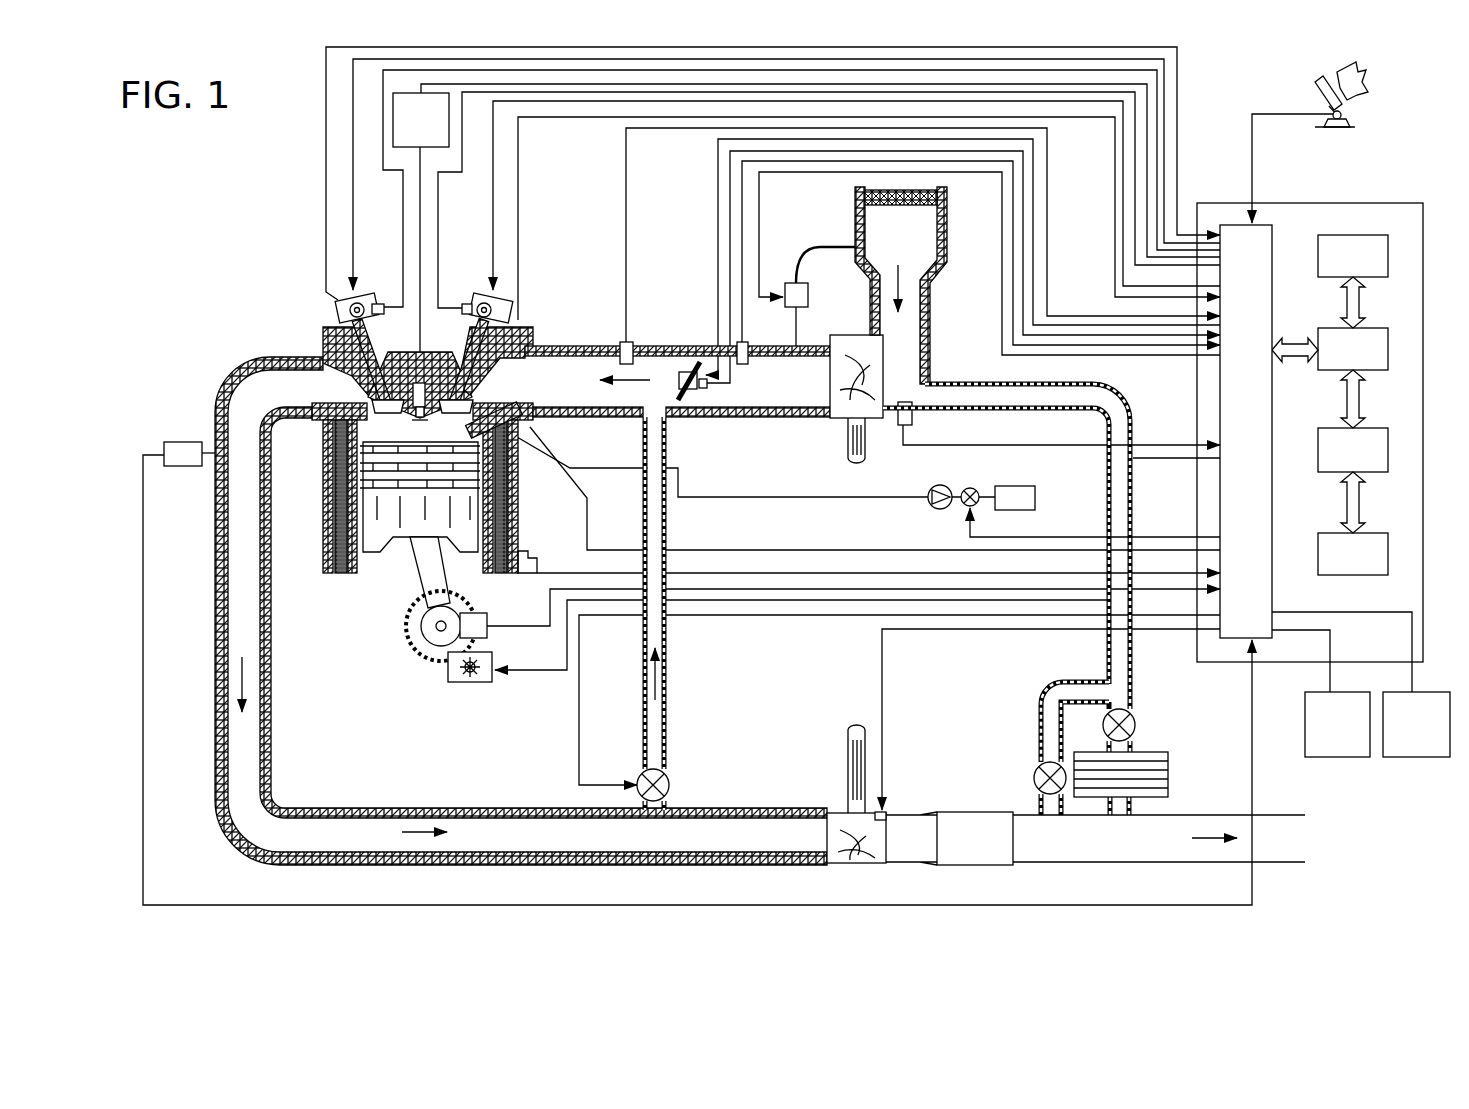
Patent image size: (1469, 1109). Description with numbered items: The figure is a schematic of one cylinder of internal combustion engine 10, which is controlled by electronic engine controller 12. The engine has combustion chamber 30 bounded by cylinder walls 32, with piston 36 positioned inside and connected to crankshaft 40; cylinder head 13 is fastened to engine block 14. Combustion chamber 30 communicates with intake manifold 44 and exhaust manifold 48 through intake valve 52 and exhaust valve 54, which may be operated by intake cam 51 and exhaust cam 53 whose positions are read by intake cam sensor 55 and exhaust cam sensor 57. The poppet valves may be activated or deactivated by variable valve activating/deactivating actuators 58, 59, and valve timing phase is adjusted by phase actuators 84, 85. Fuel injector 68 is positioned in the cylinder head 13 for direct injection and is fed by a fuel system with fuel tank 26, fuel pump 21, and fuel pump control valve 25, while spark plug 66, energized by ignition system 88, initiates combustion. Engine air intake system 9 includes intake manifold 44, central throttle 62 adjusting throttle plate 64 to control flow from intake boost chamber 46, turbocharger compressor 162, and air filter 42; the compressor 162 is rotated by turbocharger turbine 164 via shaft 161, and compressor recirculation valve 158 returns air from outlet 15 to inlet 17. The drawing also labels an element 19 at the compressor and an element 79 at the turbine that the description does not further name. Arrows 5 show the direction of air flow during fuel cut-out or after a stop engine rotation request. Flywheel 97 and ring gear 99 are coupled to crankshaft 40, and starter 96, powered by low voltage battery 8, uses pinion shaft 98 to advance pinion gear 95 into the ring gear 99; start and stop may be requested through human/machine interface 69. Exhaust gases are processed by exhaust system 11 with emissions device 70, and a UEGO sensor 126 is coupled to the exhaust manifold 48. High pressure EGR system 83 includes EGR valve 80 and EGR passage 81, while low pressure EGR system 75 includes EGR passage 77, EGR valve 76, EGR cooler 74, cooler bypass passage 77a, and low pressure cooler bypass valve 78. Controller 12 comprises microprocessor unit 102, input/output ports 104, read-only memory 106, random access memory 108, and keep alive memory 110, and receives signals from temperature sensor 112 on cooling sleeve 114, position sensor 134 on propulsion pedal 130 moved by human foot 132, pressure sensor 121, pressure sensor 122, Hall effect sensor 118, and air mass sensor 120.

The arrows 5 is at (250, 670).
The low voltage battery 8 is at (1361, 684).
The engine air intake system 9 is at (695, 265).
The internal combustion engine 10 is at (262, 278).
The exhaust system 11 is at (225, 382).
The electronic engine controller 12 is at (1400, 203).
The cylinder head 13 is at (520, 342).
The engine block 14 is at (324, 437).
The outlet of compressor 15 is at (808, 340).
The inlet of compressor 17 is at (883, 345).
The compressor wheel 19 is at (876, 383).
The fuel pump 21 is at (938, 486).
The fuel pump control valve 25 is at (968, 505).
The fuel tank 26 is at (1004, 509).
The combustion chamber 30 is at (325, 532).
The cylinder walls 32 is at (365, 565).
The piston 36 is at (405, 540).
The crankshaft 40 is at (425, 652).
The air filter 42 is at (910, 205).
The intake manifold 44 is at (556, 394).
The intake boost chamber 46 is at (731, 394).
The exhaust manifold 48 is at (276, 397).
The intake cam 51 is at (493, 275).
The intake valve 52 is at (478, 382).
The exhaust cam 53 is at (357, 272).
The exhaust valve 54 is at (374, 400).
The intake cam sensor 55 is at (505, 315).
The exhaust cam sensor 57 is at (340, 300).
The variable valve activating/deactivating actuator 58 is at (372, 302).
The variable valve activating/deactivating actuator 59 is at (482, 300).
The central throttle 62 is at (685, 366).
The throttle plate 64 is at (698, 362).
The spark plug 66 is at (420, 380).
The fuel injector 68 is at (517, 437).
The human/machine interface 69 is at (1321, 693).
The emissions device 70 is at (1095, 838).
The EGR cooler 74 is at (1160, 753).
The low pressure EGR system 75 is at (990, 712).
The EGR valve 76 is at (1135, 722).
The EGR passage 77 is at (1107, 490).
The cooler bypass passage 77a is at (1040, 705).
The low pressure cooler bypass valve 78 is at (1034, 778).
The exhaust gas sensor 79 is at (888, 813).
The EGR valve 80 is at (640, 778).
The EGR passage 81 is at (647, 452).
The high pressure EGR system 83 is at (562, 752).
The phase actuator 84 is at (384, 310).
The phase actuator 85 is at (462, 310).
The ignition system 88 is at (409, 132).
The pinion gear 95 is at (475, 683).
The starter 96 is at (490, 682).
The flywheel 97 is at (418, 635).
The pinion shaft 98 is at (462, 683).
The ring gear 99 is at (438, 658).
The microprocessor unit 102 is at (1390, 352).
The input/output ports 104 is at (1272, 232).
The read-only memory 106 is at (1390, 258).
The random access memory 108 is at (1390, 450).
The keep alive memory 110 is at (1390, 550).
The temperature sensor 112 is at (533, 553).
The cooling sleeve 114 is at (338, 488).
The Hall effect sensor 118 is at (487, 620).
The air mass sensor 120 is at (912, 420).
The pressure sensor 121 is at (626, 345).
The pressure sensor 122 is at (746, 345).
The UEGO sensor 126 is at (164, 450).
The propulsion pedal 130 is at (1322, 96).
The human foot 132 is at (1370, 80).
The position sensor 134 is at (1352, 118).
The compressor recirculation valve 158 is at (793, 290).
The shaft 161 is at (850, 462).
The turbocharger compressor 162 is at (848, 440).
The turbocharger turbine 164 is at (845, 815).